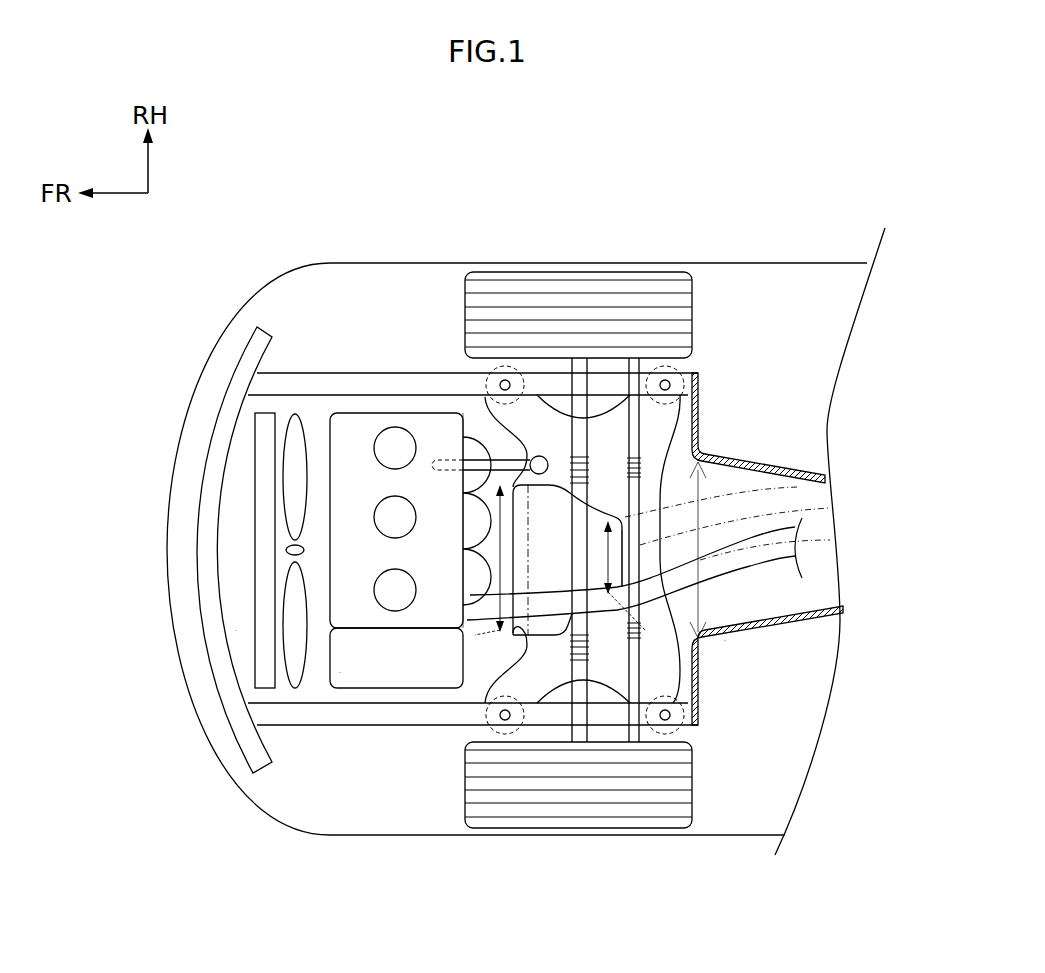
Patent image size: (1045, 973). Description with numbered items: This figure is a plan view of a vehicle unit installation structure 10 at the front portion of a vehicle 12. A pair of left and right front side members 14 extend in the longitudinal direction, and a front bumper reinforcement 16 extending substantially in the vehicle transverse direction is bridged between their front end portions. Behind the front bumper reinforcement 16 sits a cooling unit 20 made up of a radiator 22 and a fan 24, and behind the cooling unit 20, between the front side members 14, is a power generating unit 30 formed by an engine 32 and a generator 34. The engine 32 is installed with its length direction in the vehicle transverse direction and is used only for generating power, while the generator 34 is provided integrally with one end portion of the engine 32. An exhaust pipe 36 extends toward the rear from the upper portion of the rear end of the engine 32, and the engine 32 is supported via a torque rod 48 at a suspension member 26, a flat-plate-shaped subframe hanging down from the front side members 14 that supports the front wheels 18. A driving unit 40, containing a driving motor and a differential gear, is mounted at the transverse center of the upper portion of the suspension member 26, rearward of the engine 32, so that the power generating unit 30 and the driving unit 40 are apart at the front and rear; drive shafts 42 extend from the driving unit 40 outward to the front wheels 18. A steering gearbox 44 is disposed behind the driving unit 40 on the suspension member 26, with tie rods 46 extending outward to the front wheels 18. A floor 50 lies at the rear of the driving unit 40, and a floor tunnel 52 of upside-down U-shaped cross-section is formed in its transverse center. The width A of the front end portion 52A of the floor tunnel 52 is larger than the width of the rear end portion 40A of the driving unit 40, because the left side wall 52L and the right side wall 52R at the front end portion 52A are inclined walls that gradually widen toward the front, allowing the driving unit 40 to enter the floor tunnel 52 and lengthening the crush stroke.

The vehicle unit installation structure 10 is at (468, 400).
The vehicle 12 is at (763, 260).
The front side members 14 is at (323, 373).
The front bumper reinforcement 16 is at (200, 548).
The front wheels 18 is at (567, 282).
The cooling unit 20 is at (236, 630).
The radiator 22 is at (262, 482).
The fan 24 is at (287, 607).
The suspension member 26 is at (663, 510).
The power generating unit 30 is at (397, 400).
The engine 32 is at (433, 607).
The generator 34 is at (340, 672).
The exhaust pipe 36 is at (740, 565).
The driving unit 40 is at (549, 645).
The rear end portion of the driving unit 40A is at (625, 575).
The drive shafts 42 is at (598, 408).
The steering gearbox 44 is at (780, 517).
The tie rods 46 is at (640, 447).
The torque rod 48 is at (505, 457).
The floor 50 is at (818, 607).
The floor tunnel 52 is at (818, 607).
The right side wall 52R is at (767, 470).
The left side wall 52L is at (747, 645).
The front end portion of the floor tunnel 52A is at (727, 643).
The width of the front end portion A is at (783, 462).